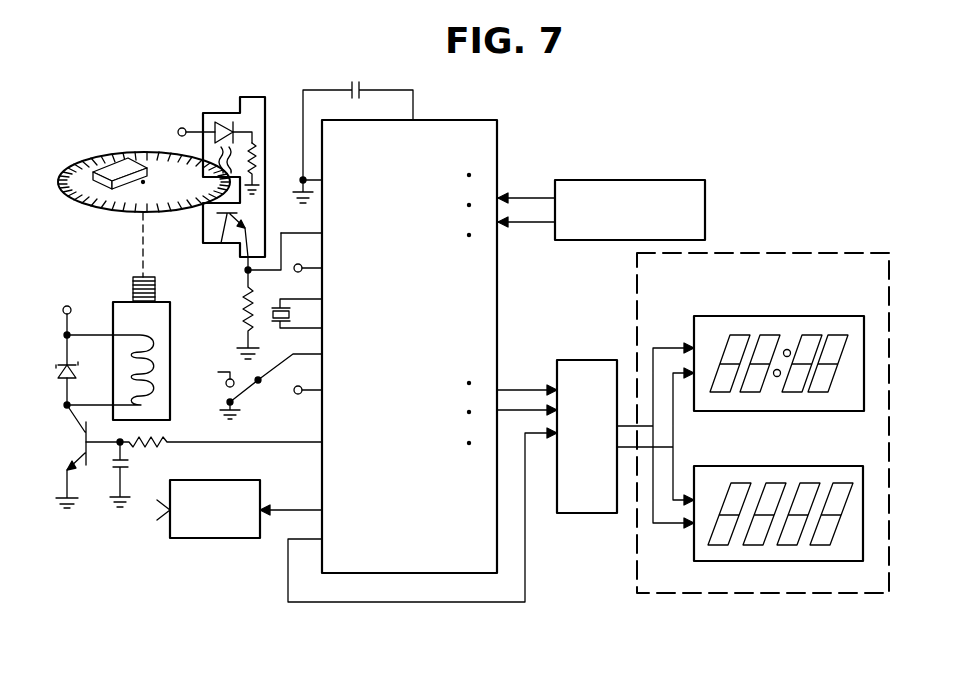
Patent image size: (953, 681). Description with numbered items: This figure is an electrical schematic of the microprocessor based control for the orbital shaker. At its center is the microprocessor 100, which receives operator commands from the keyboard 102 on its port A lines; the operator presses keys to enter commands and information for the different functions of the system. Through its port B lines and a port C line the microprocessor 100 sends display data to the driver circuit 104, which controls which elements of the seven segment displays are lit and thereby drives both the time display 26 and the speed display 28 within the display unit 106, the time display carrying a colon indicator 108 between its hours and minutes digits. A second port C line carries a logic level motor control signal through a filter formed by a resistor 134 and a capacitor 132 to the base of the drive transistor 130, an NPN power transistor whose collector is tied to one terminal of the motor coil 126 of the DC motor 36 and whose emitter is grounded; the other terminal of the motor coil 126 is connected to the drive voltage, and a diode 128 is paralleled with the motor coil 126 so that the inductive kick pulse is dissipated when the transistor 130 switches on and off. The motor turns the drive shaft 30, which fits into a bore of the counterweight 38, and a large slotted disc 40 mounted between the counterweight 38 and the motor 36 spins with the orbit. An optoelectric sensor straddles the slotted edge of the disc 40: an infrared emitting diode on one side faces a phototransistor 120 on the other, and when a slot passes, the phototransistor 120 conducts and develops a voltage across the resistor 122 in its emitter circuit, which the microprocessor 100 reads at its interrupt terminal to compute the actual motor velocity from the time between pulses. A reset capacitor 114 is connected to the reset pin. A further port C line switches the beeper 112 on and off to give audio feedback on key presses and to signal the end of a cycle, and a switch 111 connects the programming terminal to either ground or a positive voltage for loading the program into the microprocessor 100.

The microprocessor 100 is at (498, 157).
The keyboard 102 is at (612, 180).
The driver circuit 104 is at (261, 321).
The display unit 106 is at (768, 457).
The colon indicator 108 is at (790, 348).
The time display 26 is at (806, 352).
The speed display 28 is at (863, 528).
The drive shaft 30 is at (155, 292).
The DC motor 36 is at (170, 342).
The counterweight 38 is at (97, 193).
The slotted disc 40 is at (112, 170).
The switch 111 is at (257, 385).
The beeper 112 is at (205, 538).
The capacitor 114 is at (363, 88).
The phototransistor 120 is at (222, 238).
The resistor 122 is at (245, 305).
The motor coil 126 is at (143, 386).
The diode 128 is at (58, 371).
The drive transistor 130 is at (85, 470).
The capacitor 132 is at (128, 470).
The resistor 134 is at (160, 449).